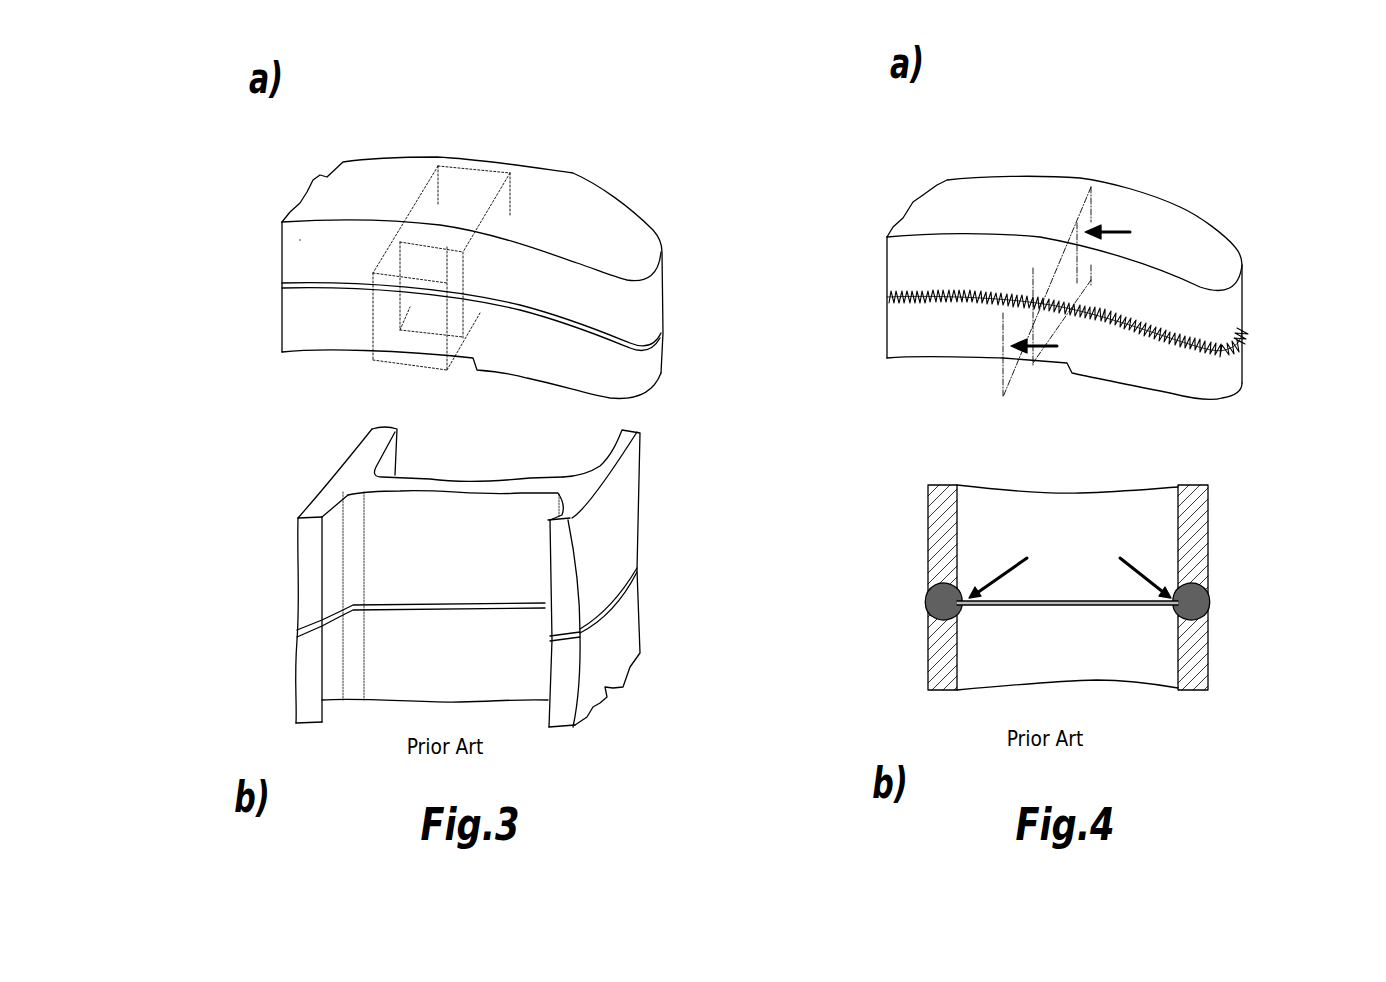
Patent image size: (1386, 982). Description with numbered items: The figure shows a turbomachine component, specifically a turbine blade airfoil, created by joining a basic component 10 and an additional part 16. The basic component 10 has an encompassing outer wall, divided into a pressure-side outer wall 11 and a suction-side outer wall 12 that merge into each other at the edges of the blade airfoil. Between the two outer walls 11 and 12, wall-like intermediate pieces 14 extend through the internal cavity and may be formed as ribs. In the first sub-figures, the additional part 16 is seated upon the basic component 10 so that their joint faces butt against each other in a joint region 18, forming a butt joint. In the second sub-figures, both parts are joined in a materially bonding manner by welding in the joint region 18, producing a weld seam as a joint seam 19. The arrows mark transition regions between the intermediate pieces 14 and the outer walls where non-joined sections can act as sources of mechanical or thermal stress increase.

In FIG. 3, the basic component 10 is at (322, 320).
In FIG. 4, the basic component 10 is at (923, 328).
In FIG. 3, the pressure-side outer wall 11 is at (353, 330).
In FIG. 4, the pressure-side outer wall 11 is at (952, 337).
In FIG. 3, the suction-side outer wall 12 is at (613, 305).
In FIG. 4, the suction-side outer wall 12 is at (1197, 313).
In FIG. 3, the intermediate piece 14 is at (480, 637).
In FIG. 4, the intermediate piece 14 is at (1100, 573).
In FIG. 3, the additional part 16 is at (330, 252).
In FIG. 4, the additional part 16 is at (932, 265).
In FIG. 3, the joint region 18 is at (635, 345).
In FIG. 4, the joint seam 19 is at (1218, 350).